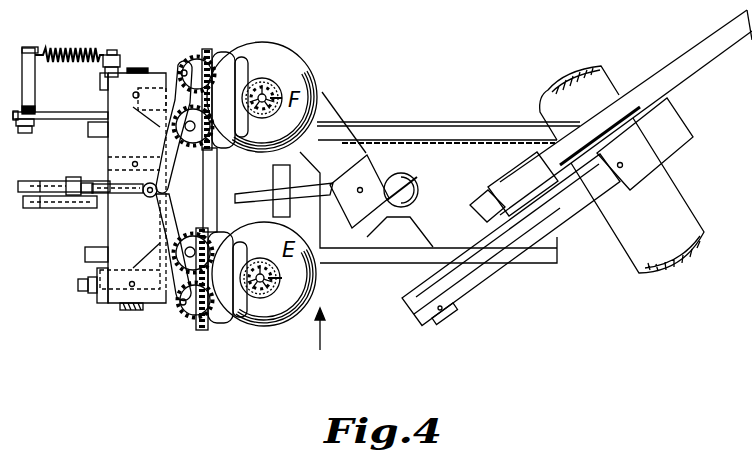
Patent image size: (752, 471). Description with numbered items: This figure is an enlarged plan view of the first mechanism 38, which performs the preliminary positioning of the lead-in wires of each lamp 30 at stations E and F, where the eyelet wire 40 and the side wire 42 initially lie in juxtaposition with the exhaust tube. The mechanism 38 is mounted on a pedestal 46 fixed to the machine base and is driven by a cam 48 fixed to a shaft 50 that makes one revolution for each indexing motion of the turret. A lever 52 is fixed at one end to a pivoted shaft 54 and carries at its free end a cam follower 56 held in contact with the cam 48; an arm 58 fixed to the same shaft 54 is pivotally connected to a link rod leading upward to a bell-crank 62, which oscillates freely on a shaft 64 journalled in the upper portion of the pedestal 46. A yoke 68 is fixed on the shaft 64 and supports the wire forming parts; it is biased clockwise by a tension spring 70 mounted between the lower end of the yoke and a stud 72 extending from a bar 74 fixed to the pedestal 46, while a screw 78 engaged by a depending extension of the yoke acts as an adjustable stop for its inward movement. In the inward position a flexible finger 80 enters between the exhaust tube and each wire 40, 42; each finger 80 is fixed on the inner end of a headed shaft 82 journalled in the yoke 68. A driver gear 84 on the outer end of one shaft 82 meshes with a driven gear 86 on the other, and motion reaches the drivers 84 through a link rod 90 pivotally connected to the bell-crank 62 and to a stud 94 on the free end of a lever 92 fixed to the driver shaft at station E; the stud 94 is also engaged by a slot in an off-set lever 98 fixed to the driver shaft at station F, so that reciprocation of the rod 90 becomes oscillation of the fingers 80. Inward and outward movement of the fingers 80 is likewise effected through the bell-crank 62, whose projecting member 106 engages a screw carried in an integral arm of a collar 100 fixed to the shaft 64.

The lamp 30 is at (306, 52).
The first mechanism 38 is at (317, 342).
The eyelet wire 40 is at (265, 91).
The side wire 42 is at (259, 114).
The pedestal 46 is at (541, 264).
The cam 48 is at (688, 80).
The shaft 50 is at (686, 205).
The lever 52 is at (473, 268).
The pivoted shaft 54 is at (450, 320).
The cam follower 56 is at (507, 180).
The arm 58 is at (303, 198).
The bell-crank 62 is at (58, 206).
The shaft 64 is at (132, 311).
The yoke 68 is at (222, 52).
The tension spring 70 is at (76, 49).
The stud 72 is at (32, 86).
The bar 74 is at (62, 117).
The screw 78 is at (80, 292).
The flexible finger 80 is at (281, 104).
The headed shaft 82 is at (244, 77).
The driver gear 84 is at (196, 49).
The driven gear 86 is at (217, 154).
The link rod 90 is at (121, 193).
The lever 92 is at (175, 286).
The stud 94 is at (157, 187).
The off-set lever 98 is at (181, 92).
The collar 100 is at (135, 109).
The projecting member 106 is at (77, 177).